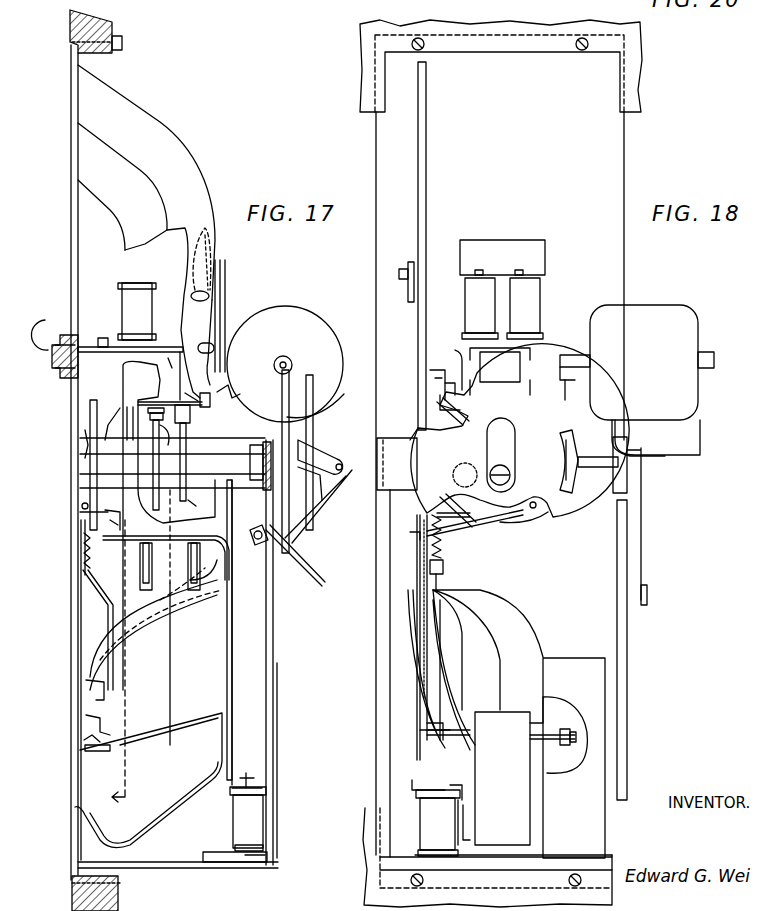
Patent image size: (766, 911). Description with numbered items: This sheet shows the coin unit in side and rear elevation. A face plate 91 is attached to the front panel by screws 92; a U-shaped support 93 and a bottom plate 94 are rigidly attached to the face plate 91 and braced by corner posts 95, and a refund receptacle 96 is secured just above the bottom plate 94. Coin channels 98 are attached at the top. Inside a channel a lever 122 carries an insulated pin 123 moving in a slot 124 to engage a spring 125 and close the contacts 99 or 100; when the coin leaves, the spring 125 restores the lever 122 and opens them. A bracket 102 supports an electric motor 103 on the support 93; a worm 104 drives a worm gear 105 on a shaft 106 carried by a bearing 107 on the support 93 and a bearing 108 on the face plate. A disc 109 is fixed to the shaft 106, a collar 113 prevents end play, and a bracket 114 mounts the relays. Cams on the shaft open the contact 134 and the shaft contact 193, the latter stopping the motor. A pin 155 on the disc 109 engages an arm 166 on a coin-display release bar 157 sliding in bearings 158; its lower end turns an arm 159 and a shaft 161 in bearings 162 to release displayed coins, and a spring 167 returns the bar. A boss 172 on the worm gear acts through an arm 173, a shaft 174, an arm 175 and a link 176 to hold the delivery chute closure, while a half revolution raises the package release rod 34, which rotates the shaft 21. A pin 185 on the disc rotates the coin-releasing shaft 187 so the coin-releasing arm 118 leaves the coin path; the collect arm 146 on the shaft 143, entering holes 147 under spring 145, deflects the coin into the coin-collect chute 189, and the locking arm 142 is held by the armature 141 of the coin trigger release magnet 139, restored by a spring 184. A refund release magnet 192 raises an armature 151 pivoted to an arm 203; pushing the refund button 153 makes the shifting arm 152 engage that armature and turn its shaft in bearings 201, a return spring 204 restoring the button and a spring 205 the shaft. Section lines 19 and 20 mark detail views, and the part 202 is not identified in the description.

In FIG. 17, the pin 19 is at (199, 464).
In FIG. 17, the section line 20 is at (119, 671).
In FIG. 17, the shaft 21 is at (170, 453).
In FIG. 17, the package release rod 34 is at (314, 384).
In FIG. 18, the package release rod 34 is at (516, 452).
In FIG. 17, the face plate 91 is at (70, 162).
In FIG. 18, the face plate 91 is at (626, 142).
In FIG. 17, the screws 92 is at (122, 42).
In FIG. 18, the screws 92 is at (425, 44).
In FIG. 17, the U-shaped support 93 is at (241, 630).
In FIG. 18, the U-shaped support 93 is at (400, 492).
In FIG. 17, the bottom plate 94 is at (205, 872).
In FIG. 18, the bottom plate 94 is at (575, 855).
In FIG. 17, the corner posts 95 is at (275, 648).
In FIG. 18, the corner posts 95 is at (375, 684).
In FIG. 17, the refund receptacle 96 is at (172, 822).
In FIG. 18, the refund receptacle 96 is at (540, 812).
In FIG. 17, the coin channels 98 is at (125, 178).
In FIG. 18, the coin channels 98 is at (427, 162).
In FIG. 17, the contacts 99 is at (222, 258).
In FIG. 18, the contacts 99 is at (411, 264).
In FIG. 17, the contacts 100 is at (216, 250).
In FIG. 17, the bracket 102 is at (312, 412).
In FIG. 18, the bracket 102 is at (685, 430).
In FIG. 17, the electric motor 103 is at (300, 313).
In FIG. 18, the electric motor 103 is at (660, 308).
In FIG. 17, the worm 104 is at (290, 357).
In FIG. 18, the worm 104 is at (494, 376).
In FIG. 17, the worm gear 105 is at (280, 400).
In FIG. 18, the worm gear 105 is at (413, 432).
In FIG. 17, the shaft 106 is at (172, 463).
In FIG. 17, the bearing 107 is at (262, 512).
In FIG. 17, the bearing 108 is at (88, 440).
In FIG. 17, the disc 109 is at (89, 406).
In FIG. 18, the disc 109 is at (495, 520).
In FIG. 17, the collar 113 is at (256, 468).
In FIG. 17, the bracket 114 is at (278, 715).
In FIG. 18, the bracket 114 is at (562, 658).
In FIG. 17, the coin-releasing arm 118 is at (174, 525).
In FIG. 18, the coin-releasing arm 118 is at (445, 376).
In FIG. 17, the lever 122 is at (212, 300).
In FIG. 18, the insulated pin 123 is at (404, 276).
In FIG. 17, the slot 124 is at (210, 232).
In FIG. 17, the spring 125 is at (208, 296).
In FIG. 17, the contact 134 is at (192, 420).
In FIG. 17, the coin trigger release magnet 139 is at (230, 830).
In FIG. 18, the coin trigger release magnet 139 is at (418, 832).
In FIG. 17, the armature 141 is at (260, 790).
In FIG. 18, the armature 141 is at (456, 786).
In FIG. 17, the locking arm 142 is at (238, 620).
In FIG. 18, the locking arm 142 is at (512, 525).
In FIG. 17, the coin-collect shaft 143 is at (184, 617).
In FIG. 18, the coin-collect shaft 143 is at (413, 708).
In FIG. 17, the spring 145 is at (129, 519).
In FIG. 17, the collect arm 146 is at (140, 538).
In FIG. 18, the collect arm 146 is at (418, 580).
In FIG. 17, the holes 147 is at (215, 590).
In FIG. 17, the armature 151 is at (177, 346).
In FIG. 18, the armature 151 is at (530, 345).
In FIG. 17, the shifting arm 152 is at (116, 345).
In FIG. 17, the refund button 153 is at (60, 360).
In FIG. 17, the pin 155 is at (82, 504).
In FIG. 18, the pin 155 is at (465, 475).
In FIG. 18, the coin-display release bar 157 is at (443, 653).
In FIG. 17, the bearings 158 is at (82, 572).
In FIG. 18, the bearings 158 is at (445, 574).
In FIG. 17, the arm 159 is at (125, 756).
In FIG. 18, the arm 159 is at (427, 733).
In FIG. 18, the shaft 161 is at (545, 740).
In FIG. 17, the bearings 162 is at (84, 748).
In FIG. 18, the bearings 162 is at (565, 745).
In FIG. 18, the arm 166 is at (460, 512).
In FIG. 17, the spring 167 is at (80, 548).
In FIG. 17, the boss 172 is at (298, 495).
In FIG. 18, the boss 172 is at (564, 484).
In FIG. 17, the arm 173 is at (318, 450).
In FIG. 18, the arm 173 is at (560, 442).
In FIG. 18, the shaft 174 is at (612, 468).
In FIG. 17, the arm 175 is at (313, 492).
In FIG. 18, the arm 175 is at (643, 486).
In FIG. 17, the link 176 is at (300, 577).
In FIG. 18, the link 176 is at (648, 584).
In FIG. 18, the spring 184 is at (470, 820).
In FIG. 17, the pin 185 is at (80, 514).
In FIG. 18, the pin 185 is at (535, 510).
In FIG. 17, the coin-releasing shaft 187 is at (127, 426).
In FIG. 17, the coin-collect chute 189 is at (95, 650).
In FIG. 18, the coin-collect chute 189 is at (540, 620).
In FIG. 17, the refund release magnet 192 is at (150, 308).
In FIG. 18, the refund release magnet 192 is at (495, 318).
In FIG. 17, the shaft contact 193 is at (185, 433).
In FIG. 18, the bearings 201 is at (572, 395).
In FIG. 17, the stop 202 is at (218, 392).
In FIG. 18, the stop 202 is at (458, 388).
In FIG. 17, the arm 203 is at (156, 359).
In FIG. 18, the arm 203 is at (458, 355).
In FIG. 17, the return spring 204 is at (49, 327).
In FIG. 18, the spring 205 is at (575, 377).